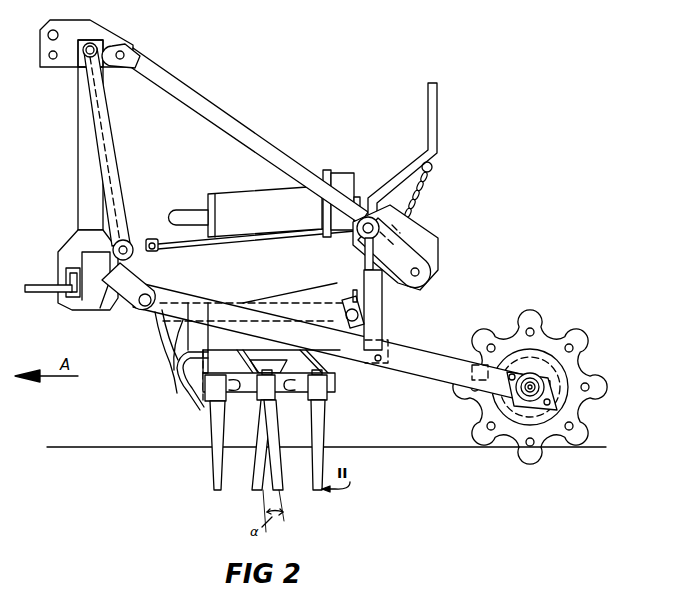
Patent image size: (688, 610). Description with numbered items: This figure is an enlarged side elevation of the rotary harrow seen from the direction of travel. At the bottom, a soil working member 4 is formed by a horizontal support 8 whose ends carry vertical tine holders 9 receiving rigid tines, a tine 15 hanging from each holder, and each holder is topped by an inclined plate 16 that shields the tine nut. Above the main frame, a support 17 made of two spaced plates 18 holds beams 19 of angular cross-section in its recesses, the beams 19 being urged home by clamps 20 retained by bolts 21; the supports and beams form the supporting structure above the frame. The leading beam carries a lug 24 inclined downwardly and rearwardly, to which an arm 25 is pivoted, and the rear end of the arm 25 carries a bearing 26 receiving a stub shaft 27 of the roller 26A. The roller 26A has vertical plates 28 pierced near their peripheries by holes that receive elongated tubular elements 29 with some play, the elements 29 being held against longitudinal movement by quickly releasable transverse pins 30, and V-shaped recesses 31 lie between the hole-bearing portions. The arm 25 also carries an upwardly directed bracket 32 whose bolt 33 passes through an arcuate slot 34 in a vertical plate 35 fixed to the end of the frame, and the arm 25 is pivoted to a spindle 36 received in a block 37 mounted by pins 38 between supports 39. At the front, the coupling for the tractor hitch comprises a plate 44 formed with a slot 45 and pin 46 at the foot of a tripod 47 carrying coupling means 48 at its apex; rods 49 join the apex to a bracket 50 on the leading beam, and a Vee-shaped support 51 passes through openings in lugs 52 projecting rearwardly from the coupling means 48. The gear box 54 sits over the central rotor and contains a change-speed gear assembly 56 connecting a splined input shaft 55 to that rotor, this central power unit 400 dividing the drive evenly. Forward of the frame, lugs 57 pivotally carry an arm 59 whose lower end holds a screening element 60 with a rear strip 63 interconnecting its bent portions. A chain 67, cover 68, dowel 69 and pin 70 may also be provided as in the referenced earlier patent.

The soil working member 4 is at (243, 424).
The support 8 is at (284, 393).
The tine holder 9 is at (328, 397).
The left tine 15 is at (216, 433).
The plate 16 is at (338, 380).
The support 17 is at (247, 240).
The plate 18 is at (287, 250).
The beam 19 is at (150, 336).
The clamp 20 is at (110, 300).
The bolt 21 is at (158, 317).
The lug 24 is at (180, 348).
The arm 25 is at (185, 305).
The bearing 26 is at (520, 375).
The roller 26A is at (538, 328).
The stub shaft 27 is at (540, 400).
The plate 28 is at (538, 347).
The elongated tubular element 29 is at (585, 367).
The transverse pin 30 is at (572, 428).
The V-shaped recess 31 is at (582, 402).
The bracket 32 is at (381, 339).
The bolt 33 is at (358, 317).
The arcuate slot 34 is at (374, 302).
The plate 35 is at (337, 285).
The spindle 36 is at (437, 110).
The block 37 is at (372, 220).
The pin 38 is at (366, 236).
The support 39 is at (437, 277).
The plate 44 is at (60, 305).
The slot 45 is at (67, 274).
The pin 46 is at (50, 292).
The tripod 47 is at (85, 162).
The coupling means 48 is at (95, 32).
The rod 49 is at (110, 170).
The bracket 50 is at (114, 248).
The Vee-shaped support 51 is at (212, 115).
The lug 52 is at (140, 56).
The gear box 54 is at (215, 200).
The input shaft 55 is at (188, 215).
The change-speed gear assembly 56 is at (340, 177).
The lug 57 is at (153, 238).
The arm 59 is at (180, 382).
The screening element 60 is at (190, 398).
The strip 63 is at (202, 407).
The chain 67 is at (418, 205).
The cover 68 is at (197, 250).
The dowel 69 is at (158, 246).
The pin 70 is at (153, 251).
The power unit 400 is at (208, 182).